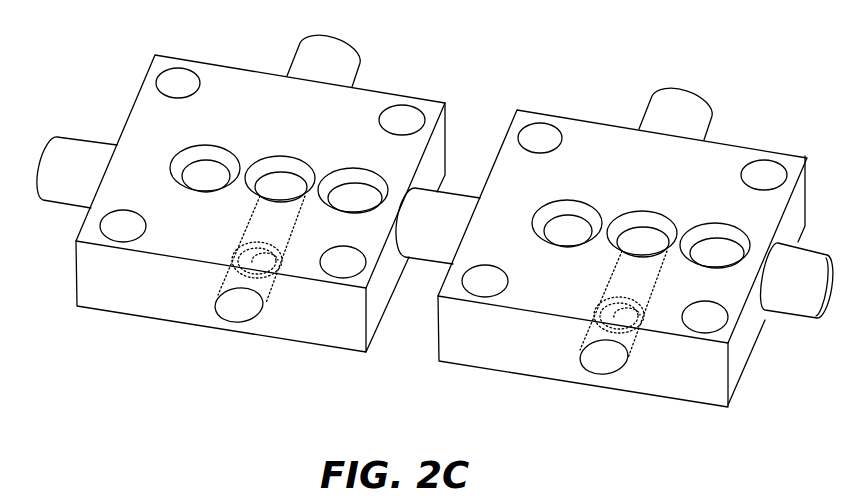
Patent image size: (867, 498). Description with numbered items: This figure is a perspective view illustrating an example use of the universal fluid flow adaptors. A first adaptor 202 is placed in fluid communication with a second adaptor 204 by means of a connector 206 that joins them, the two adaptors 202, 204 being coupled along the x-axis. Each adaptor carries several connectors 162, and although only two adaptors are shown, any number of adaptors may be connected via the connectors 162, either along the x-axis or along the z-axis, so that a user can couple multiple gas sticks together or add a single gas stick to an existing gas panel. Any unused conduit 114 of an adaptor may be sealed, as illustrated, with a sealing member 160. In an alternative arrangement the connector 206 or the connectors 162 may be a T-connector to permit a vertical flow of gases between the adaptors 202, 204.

The conduit 114 is at (227, 313).
The sealing member 160 is at (278, 270).
The connector 162 is at (310, 57).
The adaptor 202 is at (100, 72).
The adaptor 204 is at (562, 98).
The connector 206 is at (430, 242).